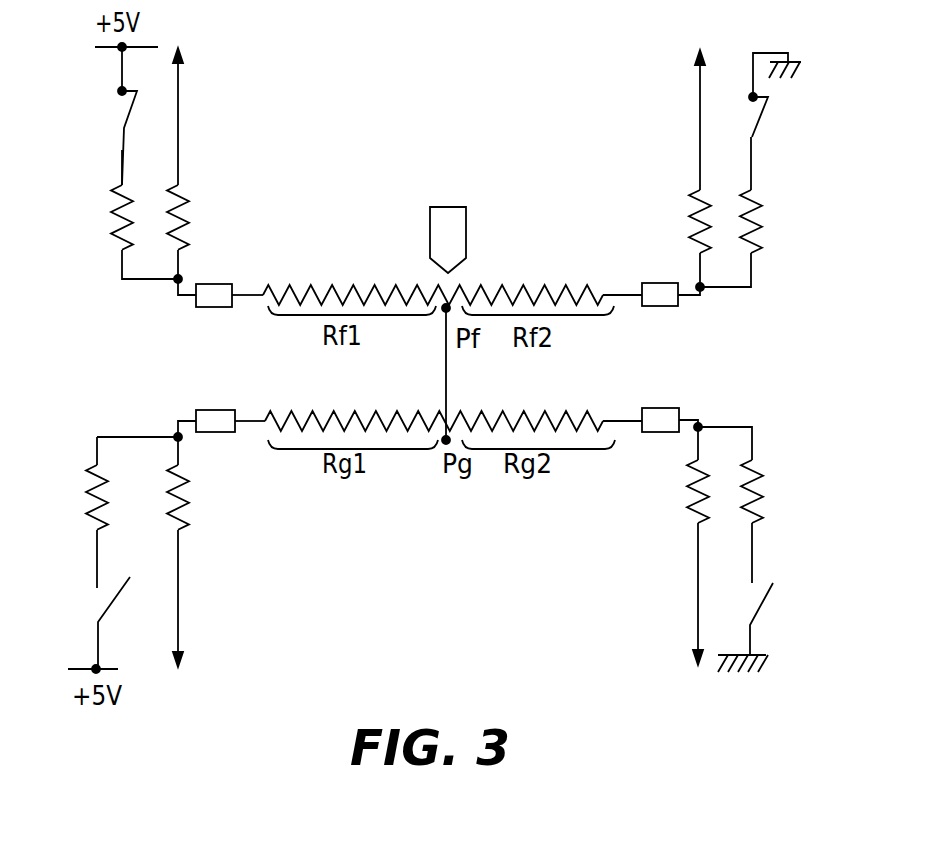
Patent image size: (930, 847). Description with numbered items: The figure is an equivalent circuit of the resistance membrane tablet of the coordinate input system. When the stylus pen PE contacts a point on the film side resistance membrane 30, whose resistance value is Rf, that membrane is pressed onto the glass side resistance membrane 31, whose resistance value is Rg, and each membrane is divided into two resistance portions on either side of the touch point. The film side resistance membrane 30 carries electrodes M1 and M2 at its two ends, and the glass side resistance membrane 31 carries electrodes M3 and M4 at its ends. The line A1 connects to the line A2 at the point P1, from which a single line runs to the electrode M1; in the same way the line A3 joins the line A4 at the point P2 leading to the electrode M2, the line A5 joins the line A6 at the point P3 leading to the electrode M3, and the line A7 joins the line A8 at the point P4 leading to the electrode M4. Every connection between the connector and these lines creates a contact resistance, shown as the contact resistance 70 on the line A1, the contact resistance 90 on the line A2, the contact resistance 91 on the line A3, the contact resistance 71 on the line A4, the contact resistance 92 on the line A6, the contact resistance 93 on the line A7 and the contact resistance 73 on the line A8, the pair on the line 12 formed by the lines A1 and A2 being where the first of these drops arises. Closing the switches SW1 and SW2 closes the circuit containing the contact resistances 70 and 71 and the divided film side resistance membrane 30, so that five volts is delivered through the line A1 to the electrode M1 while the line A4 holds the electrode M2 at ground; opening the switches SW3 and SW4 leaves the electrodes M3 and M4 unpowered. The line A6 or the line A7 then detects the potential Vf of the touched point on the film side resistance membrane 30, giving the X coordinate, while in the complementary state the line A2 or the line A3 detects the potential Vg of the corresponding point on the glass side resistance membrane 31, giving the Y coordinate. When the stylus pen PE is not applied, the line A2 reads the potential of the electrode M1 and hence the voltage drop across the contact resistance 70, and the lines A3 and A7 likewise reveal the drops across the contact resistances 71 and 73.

The line 12 is at (102, 490).
The film side resistance membrane 30 is at (395, 275).
The glass side resistance membrane 31 is at (442, 445).
The contact resistance 70 is at (115, 225).
The contact resistance 71 is at (753, 220).
The contact resistance 73 is at (792, 485).
The contact resistance 90 is at (185, 208).
The contact resistance 91 is at (682, 227).
The contact resistance 92 is at (177, 480).
The contact resistance 93 is at (688, 502).
The electrode M1 is at (215, 305).
The electrode M2 is at (662, 302).
The electrode M3 is at (213, 415).
The electrode M4 is at (665, 427).
The stylus pen PE is at (467, 230).
The switch SW1 is at (102, 136).
The switch SW2 is at (775, 92).
The switch SW3 is at (113, 593).
The switch SW4 is at (760, 603).
The line A1 is at (122, 165).
The line A2 is at (184, 98).
The line A3 is at (700, 106).
The line A4 is at (755, 155).
The line A5 is at (97, 562).
The line A6 is at (180, 614).
The line A7 is at (693, 609).
The line A8 is at (757, 560).
The point P1 is at (175, 280).
The point P2 is at (700, 287).
The point P3 is at (175, 432).
The point P4 is at (698, 427).